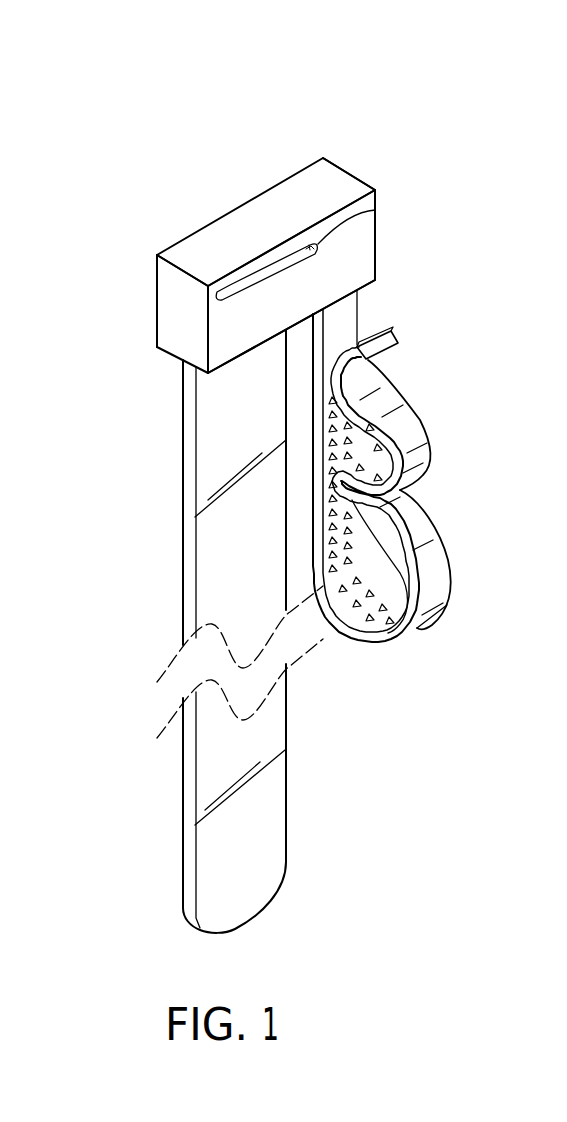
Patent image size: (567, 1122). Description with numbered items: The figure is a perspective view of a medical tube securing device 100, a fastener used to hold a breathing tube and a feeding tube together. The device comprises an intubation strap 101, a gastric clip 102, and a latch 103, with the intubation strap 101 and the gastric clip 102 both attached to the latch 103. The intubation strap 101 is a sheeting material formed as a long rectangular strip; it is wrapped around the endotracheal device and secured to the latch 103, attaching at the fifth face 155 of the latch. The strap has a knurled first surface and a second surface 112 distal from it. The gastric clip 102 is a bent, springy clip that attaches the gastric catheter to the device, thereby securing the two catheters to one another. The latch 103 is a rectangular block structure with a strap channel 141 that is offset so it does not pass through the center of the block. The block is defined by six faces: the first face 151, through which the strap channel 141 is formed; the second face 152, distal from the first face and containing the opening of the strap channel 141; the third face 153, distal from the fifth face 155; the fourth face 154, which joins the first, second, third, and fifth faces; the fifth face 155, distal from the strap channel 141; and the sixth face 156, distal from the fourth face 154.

The medical tube securing device 100 is at (87, 196).
The intubation strap 101 is at (286, 742).
The gastric clip 102 is at (443, 563).
The latch 103 is at (377, 246).
The second surface 112 is at (268, 838).
The strap channel 141 is at (378, 212).
The first face 151 is at (150, 248).
The second face 152 is at (365, 278).
The third face 153 is at (263, 215).
The fourth face 154 is at (172, 302).
The fifth face 155 is at (250, 359).
The sixth face 156 is at (351, 158).